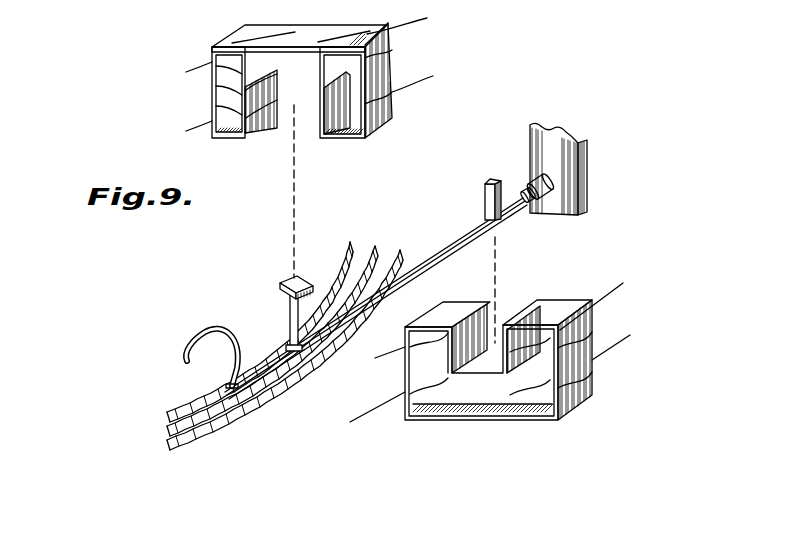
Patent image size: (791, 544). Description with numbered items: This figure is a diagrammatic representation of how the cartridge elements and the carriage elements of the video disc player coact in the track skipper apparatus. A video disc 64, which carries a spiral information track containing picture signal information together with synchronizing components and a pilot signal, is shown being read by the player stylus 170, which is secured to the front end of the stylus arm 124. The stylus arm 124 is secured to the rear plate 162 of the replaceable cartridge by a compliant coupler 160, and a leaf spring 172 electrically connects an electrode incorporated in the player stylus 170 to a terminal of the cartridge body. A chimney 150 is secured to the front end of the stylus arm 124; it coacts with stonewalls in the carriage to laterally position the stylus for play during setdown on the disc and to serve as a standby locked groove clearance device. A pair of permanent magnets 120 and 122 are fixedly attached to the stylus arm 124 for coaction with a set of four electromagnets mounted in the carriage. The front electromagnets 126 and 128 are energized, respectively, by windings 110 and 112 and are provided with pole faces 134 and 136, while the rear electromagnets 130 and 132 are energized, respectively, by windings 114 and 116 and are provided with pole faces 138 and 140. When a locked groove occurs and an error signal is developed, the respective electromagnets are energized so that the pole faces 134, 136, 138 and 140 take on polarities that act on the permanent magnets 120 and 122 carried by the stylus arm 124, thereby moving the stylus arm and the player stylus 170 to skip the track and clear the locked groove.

The video disc 64 is at (210, 443).
The winding 110 is at (195, 63).
The winding 112 is at (415, 84).
The winding 114 is at (375, 410).
The winding 116 is at (621, 343).
The permanent magnet 120 is at (292, 275).
The permanent magnet 122 is at (488, 181).
The stylus arm 124 is at (469, 235).
The front electromagnet 126 is at (240, 143).
The front electromagnet 128 is at (350, 147).
The rear electromagnet 130 is at (473, 290).
The rear electromagnet 132 is at (562, 293).
The pole face 134 is at (299, 54).
The pole face 136 is at (318, 110).
The pole face 138 is at (472, 353).
The pole face 140 is at (505, 360).
The chimney 150 is at (292, 302).
The compliant coupler 160 is at (553, 205).
The rear plate 162 is at (589, 165).
The player stylus 170 is at (243, 402).
The leaf spring 172 is at (213, 327).